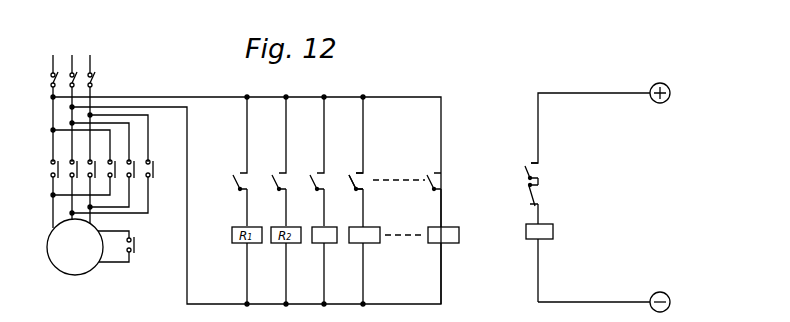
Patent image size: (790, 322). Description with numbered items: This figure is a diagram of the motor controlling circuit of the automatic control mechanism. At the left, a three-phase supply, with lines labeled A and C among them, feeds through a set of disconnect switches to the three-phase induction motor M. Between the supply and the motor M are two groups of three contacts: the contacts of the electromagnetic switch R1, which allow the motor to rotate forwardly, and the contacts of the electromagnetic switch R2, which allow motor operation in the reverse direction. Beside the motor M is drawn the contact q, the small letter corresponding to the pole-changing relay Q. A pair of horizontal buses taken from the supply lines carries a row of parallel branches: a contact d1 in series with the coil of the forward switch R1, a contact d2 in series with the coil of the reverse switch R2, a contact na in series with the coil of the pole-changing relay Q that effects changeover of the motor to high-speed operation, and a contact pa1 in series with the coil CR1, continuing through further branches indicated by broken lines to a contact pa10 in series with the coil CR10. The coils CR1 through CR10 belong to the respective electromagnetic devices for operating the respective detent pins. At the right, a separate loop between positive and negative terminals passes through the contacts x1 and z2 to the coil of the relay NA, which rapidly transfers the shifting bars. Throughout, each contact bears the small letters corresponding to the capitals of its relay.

The supply line A is at (71, 100).
The supply line C is at (90, 100).
The electromagnetic switch for forward rotation R1 is at (64, 162).
The electromagnetic switch for reverse rotation R2 is at (124, 162).
The three-phase induction motor M is at (75, 247).
The contact of pole-changing relay Q q is at (123, 246).
The relay contact d1 is at (236, 161).
The relay contact d2 is at (275, 161).
The contact of relay NA na is at (311, 161).
The relay contact pa1 is at (356, 181).
The relay contact pa10 is at (424, 191).
The pole-changing relay Q is at (324, 265).
The electromagnetic device coil CR1 is at (358, 200).
The electromagnetic device coil CR10 is at (443, 265).
The relay contact x1 is at (527, 166).
The relay contact z2 is at (524, 204).
The relay for rapidly transferring shifting bars NA is at (539, 263).